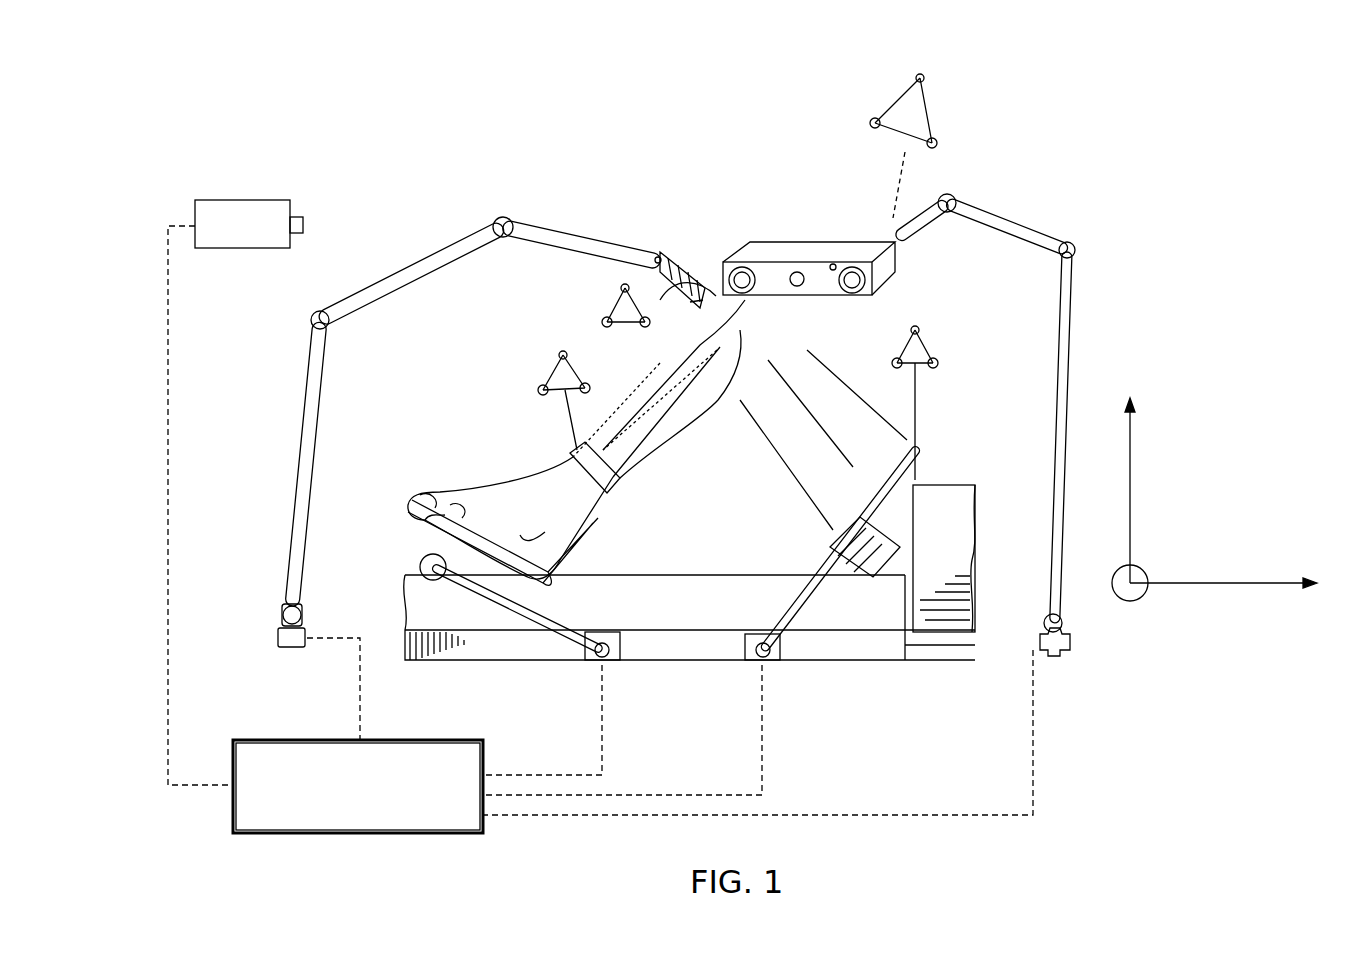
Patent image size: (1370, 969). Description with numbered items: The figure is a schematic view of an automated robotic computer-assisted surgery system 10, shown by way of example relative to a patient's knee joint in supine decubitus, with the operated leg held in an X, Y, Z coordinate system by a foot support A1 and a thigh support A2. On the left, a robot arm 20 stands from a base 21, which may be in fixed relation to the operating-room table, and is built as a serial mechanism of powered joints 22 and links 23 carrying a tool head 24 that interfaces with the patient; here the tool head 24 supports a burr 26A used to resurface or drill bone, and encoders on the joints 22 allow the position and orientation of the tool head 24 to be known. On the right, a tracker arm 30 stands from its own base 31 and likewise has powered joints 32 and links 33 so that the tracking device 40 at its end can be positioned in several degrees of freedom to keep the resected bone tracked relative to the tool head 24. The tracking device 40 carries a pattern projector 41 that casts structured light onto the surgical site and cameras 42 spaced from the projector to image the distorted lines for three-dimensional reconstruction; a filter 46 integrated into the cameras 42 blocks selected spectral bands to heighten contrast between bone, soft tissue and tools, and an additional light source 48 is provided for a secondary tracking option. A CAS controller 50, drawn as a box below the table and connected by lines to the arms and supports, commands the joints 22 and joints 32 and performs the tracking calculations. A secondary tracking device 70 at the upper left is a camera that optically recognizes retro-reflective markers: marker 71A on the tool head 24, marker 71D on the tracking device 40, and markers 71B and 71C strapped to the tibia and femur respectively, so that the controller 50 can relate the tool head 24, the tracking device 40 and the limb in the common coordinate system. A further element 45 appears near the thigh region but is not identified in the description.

The automated robotic computer-assisted surgery (CAS) system 10 is at (712, 118).
The robot arm 20 is at (415, 232).
The base 21 is at (278, 640).
The joints 22 is at (311, 318).
The links 23 is at (406, 285).
The tool head 24 is at (710, 285).
The burr 26A is at (690, 318).
The tracker arm 30 is at (1070, 245).
The base 31 is at (1068, 650).
The joints 32 is at (947, 215).
The links 33 is at (1003, 228).
The tracking device 40 is at (760, 240).
The pattern projector 41 is at (797, 272).
The cameras 42 is at (850, 300).
The leg support 45 is at (918, 447).
The filter 46 is at (860, 290).
The light source 48 is at (833, 264).
The CAS controller 50 is at (263, 740).
The secondary tracking device 70 is at (245, 200).
The marker 71A is at (615, 300).
The marker 71B is at (568, 418).
The marker 71C is at (918, 393).
The marker 71D is at (928, 108).
The foot support A1 is at (542, 587).
The thigh support A2 is at (862, 578).